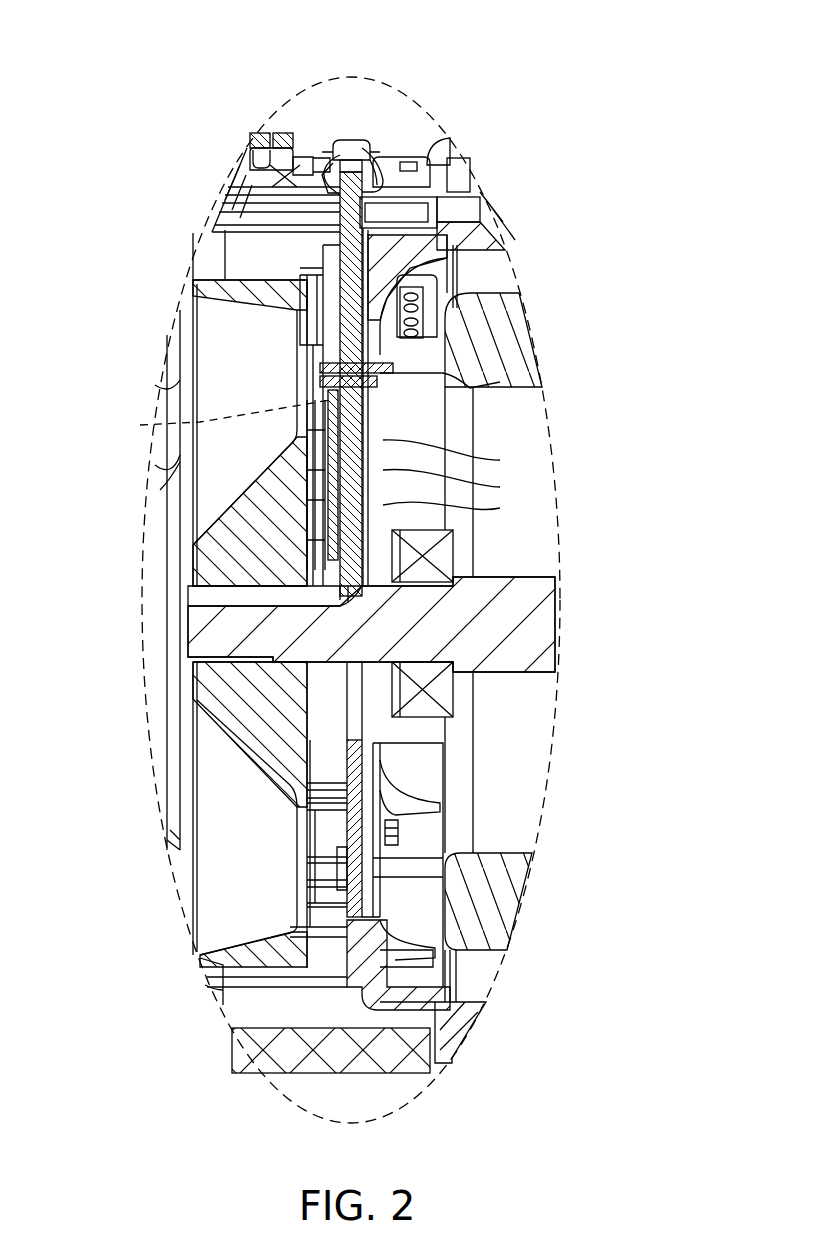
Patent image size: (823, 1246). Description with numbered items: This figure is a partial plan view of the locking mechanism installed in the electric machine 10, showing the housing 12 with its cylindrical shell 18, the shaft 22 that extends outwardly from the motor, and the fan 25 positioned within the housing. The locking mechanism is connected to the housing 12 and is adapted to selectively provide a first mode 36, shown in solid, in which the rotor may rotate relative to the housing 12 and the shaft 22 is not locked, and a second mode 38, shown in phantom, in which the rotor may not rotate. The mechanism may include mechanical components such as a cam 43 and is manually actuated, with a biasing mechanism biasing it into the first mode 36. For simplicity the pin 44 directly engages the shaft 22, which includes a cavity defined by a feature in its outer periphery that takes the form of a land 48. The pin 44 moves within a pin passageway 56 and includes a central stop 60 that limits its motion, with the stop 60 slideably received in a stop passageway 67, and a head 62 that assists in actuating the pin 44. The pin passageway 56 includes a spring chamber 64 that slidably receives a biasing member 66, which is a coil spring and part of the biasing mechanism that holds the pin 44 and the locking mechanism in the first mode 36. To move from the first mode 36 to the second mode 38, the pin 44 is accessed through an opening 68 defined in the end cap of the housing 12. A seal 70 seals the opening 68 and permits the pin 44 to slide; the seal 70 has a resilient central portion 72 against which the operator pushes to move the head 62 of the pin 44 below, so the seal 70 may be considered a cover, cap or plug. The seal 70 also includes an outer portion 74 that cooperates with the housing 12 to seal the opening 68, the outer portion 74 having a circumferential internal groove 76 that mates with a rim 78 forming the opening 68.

The electric machine 10 is at (108, 70).
The housing 12 is at (185, 116).
The cylindrical shell 18 is at (432, 168).
The shaft 22 is at (545, 615).
The fan 25 is at (217, 341).
The first mode 36 is at (373, 397).
The second mode 38 is at (160, 425).
The cam 43 is at (645, 208).
The pin 44 is at (500, 462).
The land 48 is at (213, 597).
The pin passageway 56 is at (333, 268).
The central stop 60 is at (500, 382).
The head 62 is at (345, 158).
The spring chamber 64 is at (500, 508).
The biasing member 66 is at (500, 488).
The stop passageway 67 is at (380, 418).
The opening 68 is at (353, 130).
The seal 70 is at (376, 112).
The resilient central portion 72 is at (366, 158).
The outer portion 74 is at (310, 165).
The circumferential internal groove 76 is at (401, 175).
The rim 78 is at (313, 165).